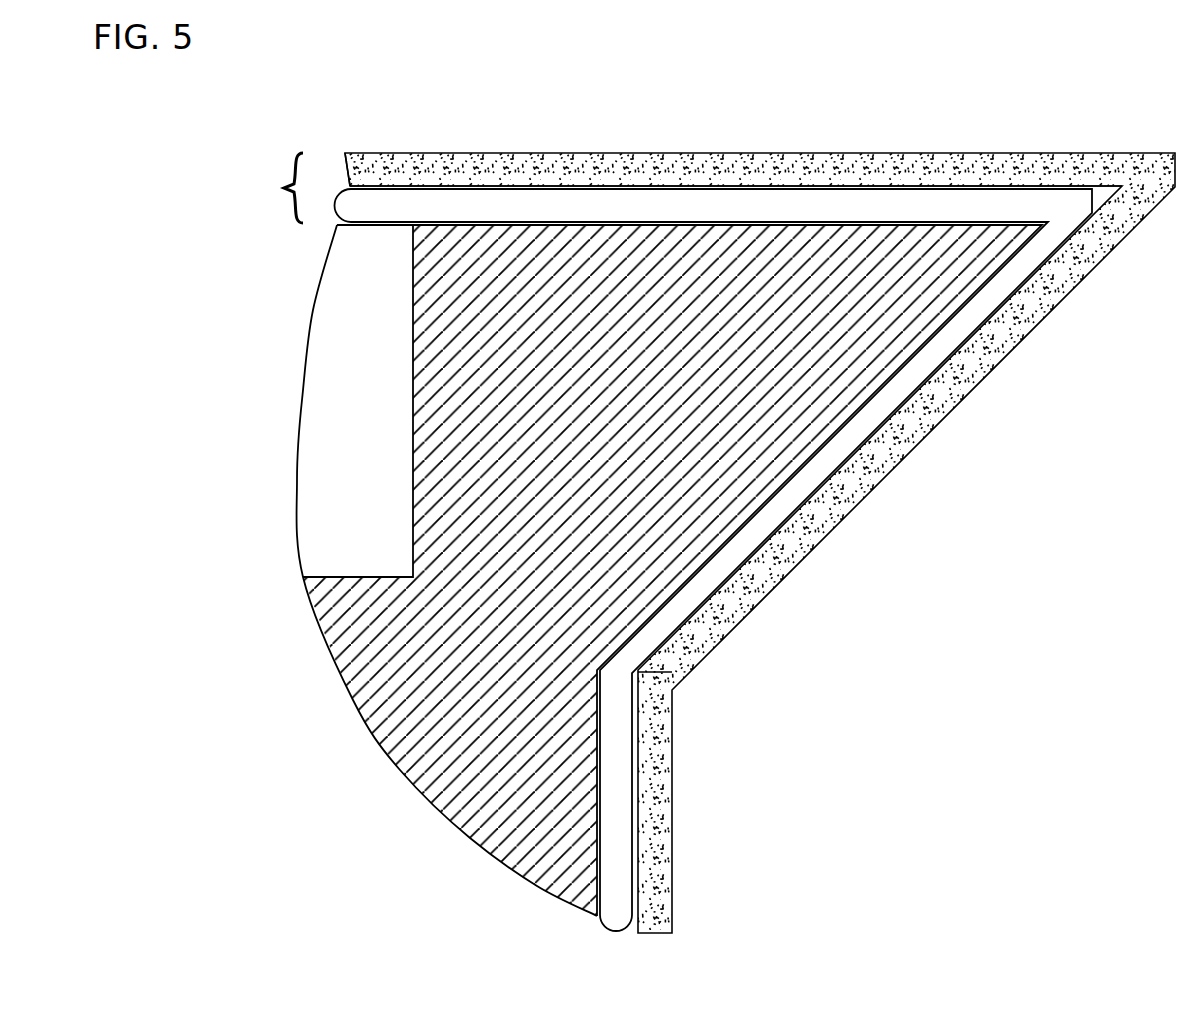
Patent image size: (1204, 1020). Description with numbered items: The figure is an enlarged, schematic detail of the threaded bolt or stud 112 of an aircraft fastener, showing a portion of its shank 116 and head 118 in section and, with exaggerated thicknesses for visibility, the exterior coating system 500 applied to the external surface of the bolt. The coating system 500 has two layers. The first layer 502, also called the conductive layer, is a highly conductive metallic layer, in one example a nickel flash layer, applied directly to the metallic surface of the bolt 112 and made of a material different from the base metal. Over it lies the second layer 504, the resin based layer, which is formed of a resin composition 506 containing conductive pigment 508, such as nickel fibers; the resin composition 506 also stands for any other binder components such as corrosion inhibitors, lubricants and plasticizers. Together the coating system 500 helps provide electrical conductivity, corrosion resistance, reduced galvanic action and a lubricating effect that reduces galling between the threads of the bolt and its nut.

The threaded bolt or stud 112 is at (668, 112).
The shank 116 is at (366, 757).
The head 118 is at (410, 377).
The coating system 500 is at (271, 187).
The first layer (conductive layer) 502 is at (935, 207).
The second layer (resin based layer) 504 is at (348, 165).
The resin composition 506 is at (425, 162).
The conductive pigment 508 is at (522, 178).